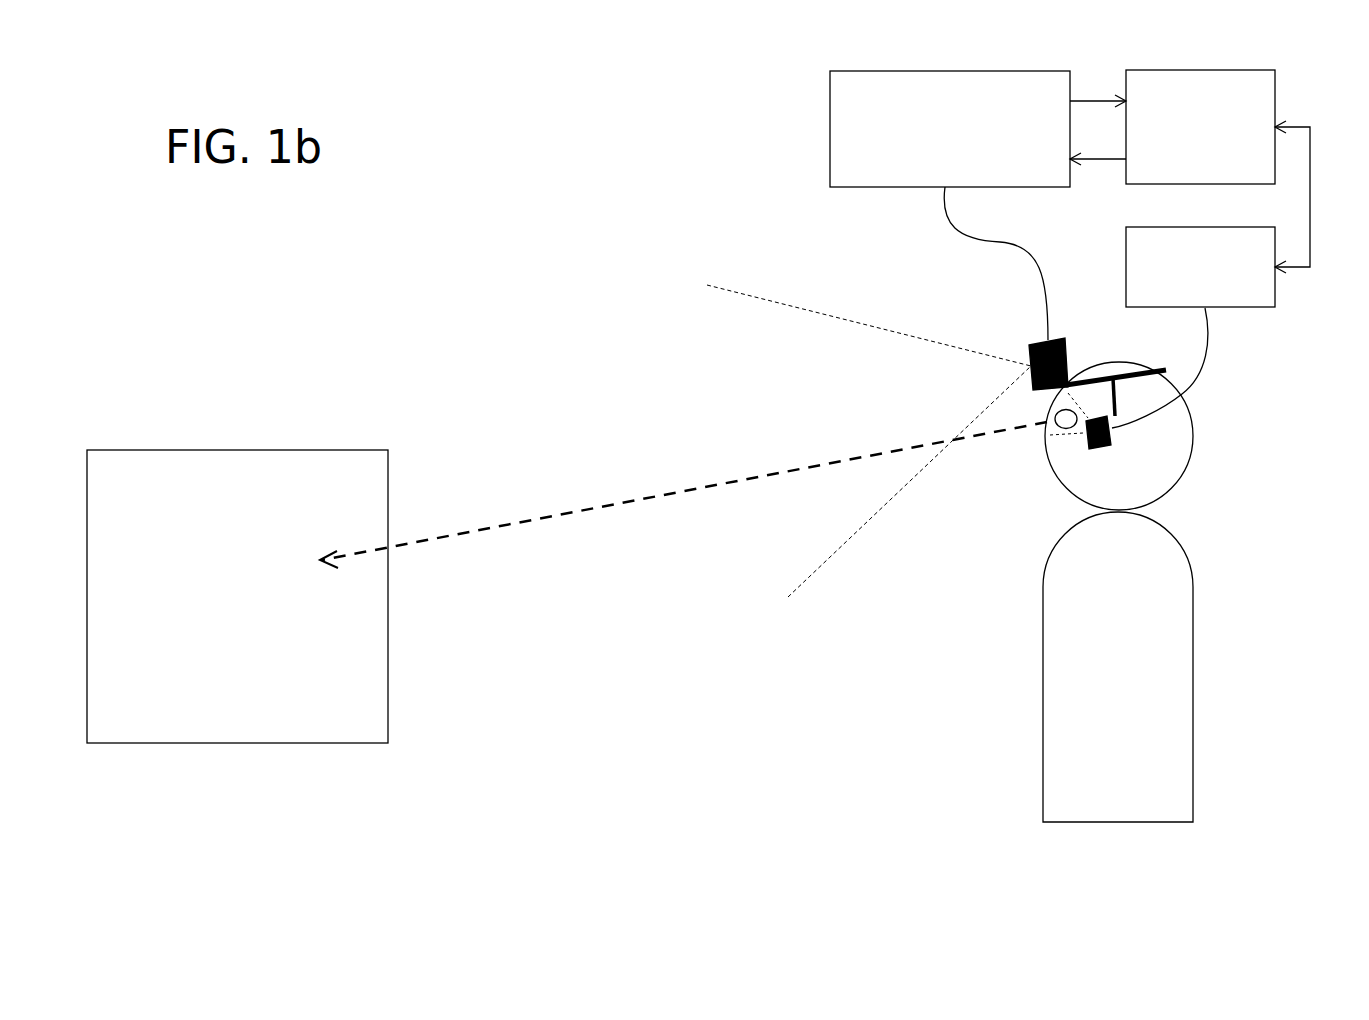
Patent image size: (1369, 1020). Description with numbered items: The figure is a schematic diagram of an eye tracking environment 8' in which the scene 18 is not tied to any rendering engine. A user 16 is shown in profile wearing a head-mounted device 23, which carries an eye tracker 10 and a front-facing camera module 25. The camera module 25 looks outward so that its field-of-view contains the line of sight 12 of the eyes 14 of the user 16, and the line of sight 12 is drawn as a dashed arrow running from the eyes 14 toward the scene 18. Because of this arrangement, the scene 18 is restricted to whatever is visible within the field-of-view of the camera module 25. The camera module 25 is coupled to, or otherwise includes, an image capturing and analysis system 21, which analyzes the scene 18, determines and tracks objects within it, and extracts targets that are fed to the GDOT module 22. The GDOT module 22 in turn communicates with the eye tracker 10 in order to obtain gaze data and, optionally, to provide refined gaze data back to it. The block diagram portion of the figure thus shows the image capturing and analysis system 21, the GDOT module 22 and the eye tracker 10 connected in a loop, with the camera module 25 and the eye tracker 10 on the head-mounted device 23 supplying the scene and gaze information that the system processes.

The eye tracking environment 8' is at (687, 664).
The eye tracker 10 is at (1245, 308).
The line of sight 12 is at (542, 515).
The eyes 14 is at (1045, 429).
The user 16 is at (1190, 586).
The scene 18 is at (388, 618).
The image capturing and analysis system 21 is at (830, 123).
The GDOT module 22 is at (1193, 69).
The head-mounted device 23 is at (1112, 432).
The front-facing camera module 25 is at (1030, 348).